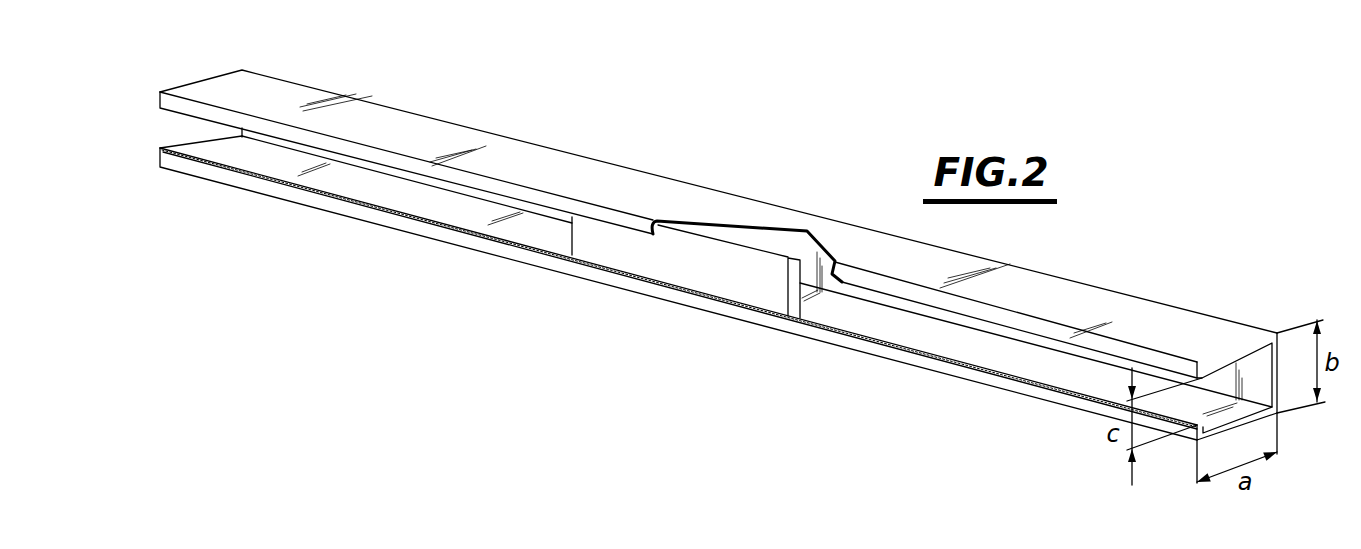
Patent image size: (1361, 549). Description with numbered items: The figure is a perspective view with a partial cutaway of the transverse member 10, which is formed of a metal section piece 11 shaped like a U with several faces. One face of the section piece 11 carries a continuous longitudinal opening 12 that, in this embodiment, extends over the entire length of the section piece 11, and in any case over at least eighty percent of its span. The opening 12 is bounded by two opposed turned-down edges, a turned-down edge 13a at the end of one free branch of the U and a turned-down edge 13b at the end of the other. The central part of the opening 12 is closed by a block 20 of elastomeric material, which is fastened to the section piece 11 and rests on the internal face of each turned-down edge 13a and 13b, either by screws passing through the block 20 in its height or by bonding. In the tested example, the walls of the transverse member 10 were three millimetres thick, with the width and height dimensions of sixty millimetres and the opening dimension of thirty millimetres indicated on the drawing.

The transverse member 10 is at (670, 232).
The section piece 11 is at (590, 187).
The longitudinal opening 12 is at (163, 128).
The turned-down edge 13a is at (380, 157).
The turned-down edge 13b is at (358, 210).
The block 20 is at (702, 265).